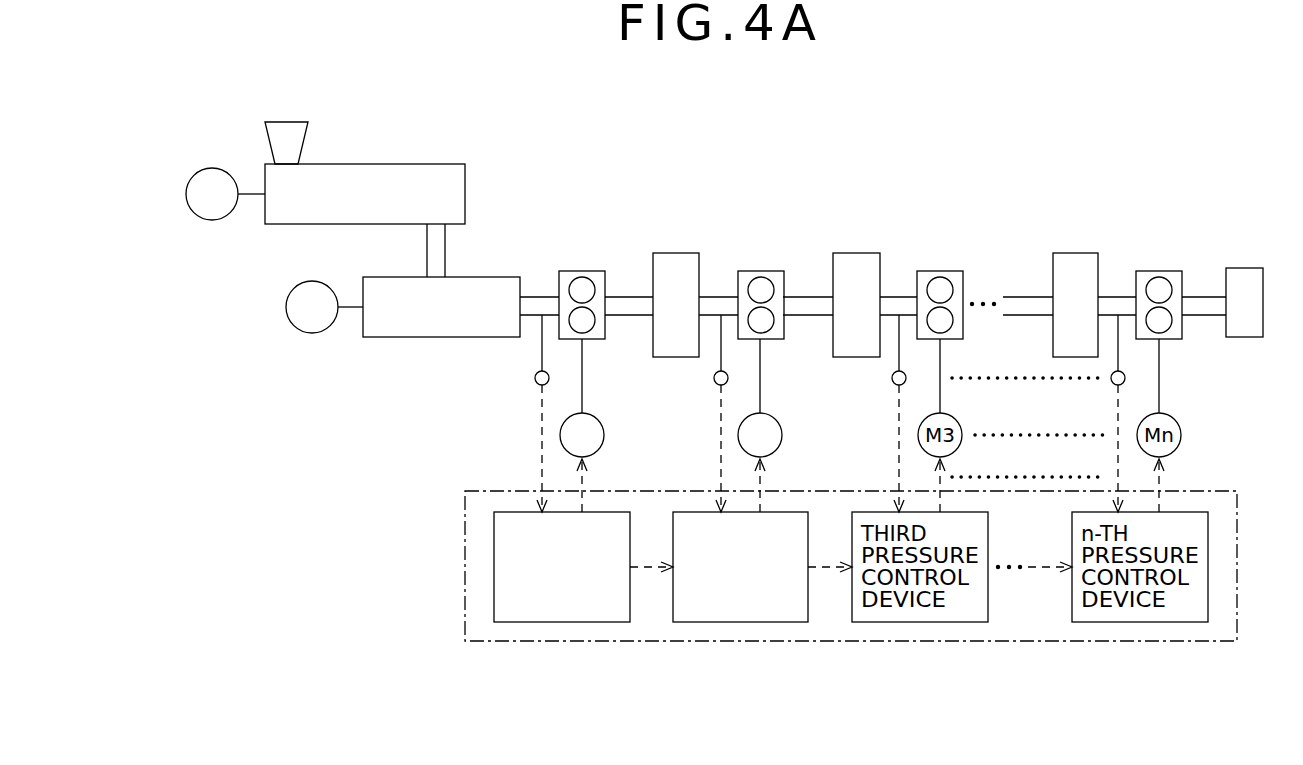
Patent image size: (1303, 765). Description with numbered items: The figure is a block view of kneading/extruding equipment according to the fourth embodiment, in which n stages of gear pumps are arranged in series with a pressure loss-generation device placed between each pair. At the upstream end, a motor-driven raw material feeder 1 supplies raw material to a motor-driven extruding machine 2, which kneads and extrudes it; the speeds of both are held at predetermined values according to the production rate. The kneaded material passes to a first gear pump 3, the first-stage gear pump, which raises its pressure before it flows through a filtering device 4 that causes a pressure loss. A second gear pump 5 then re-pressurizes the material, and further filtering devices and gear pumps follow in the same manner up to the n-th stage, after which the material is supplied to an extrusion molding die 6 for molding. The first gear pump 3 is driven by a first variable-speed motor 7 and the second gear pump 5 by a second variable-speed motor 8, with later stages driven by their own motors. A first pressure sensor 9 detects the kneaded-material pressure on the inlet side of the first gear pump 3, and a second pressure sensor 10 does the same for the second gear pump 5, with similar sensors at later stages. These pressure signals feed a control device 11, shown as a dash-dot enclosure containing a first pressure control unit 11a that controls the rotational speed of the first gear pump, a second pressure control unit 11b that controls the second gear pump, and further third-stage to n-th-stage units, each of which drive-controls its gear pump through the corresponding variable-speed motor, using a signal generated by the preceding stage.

The raw material feeder 1 is at (413, 164).
The extruding machine 2 is at (494, 277).
The first gear pump 3 is at (583, 271).
The filtering device 4 is at (676, 253).
The second gear pump 5 is at (760, 271).
The extrusion molding die 6 is at (1243, 268).
The first variable-speed motor 7 is at (605, 435).
The second variable-speed motor 8 is at (783, 435).
The first pressure sensor 9 is at (535, 378).
The second pressure sensor 10 is at (714, 378).
The control device 11 is at (465, 568).
The first pressure control unit 11a is at (560, 622).
The second pressure control unit 11b is at (740, 622).